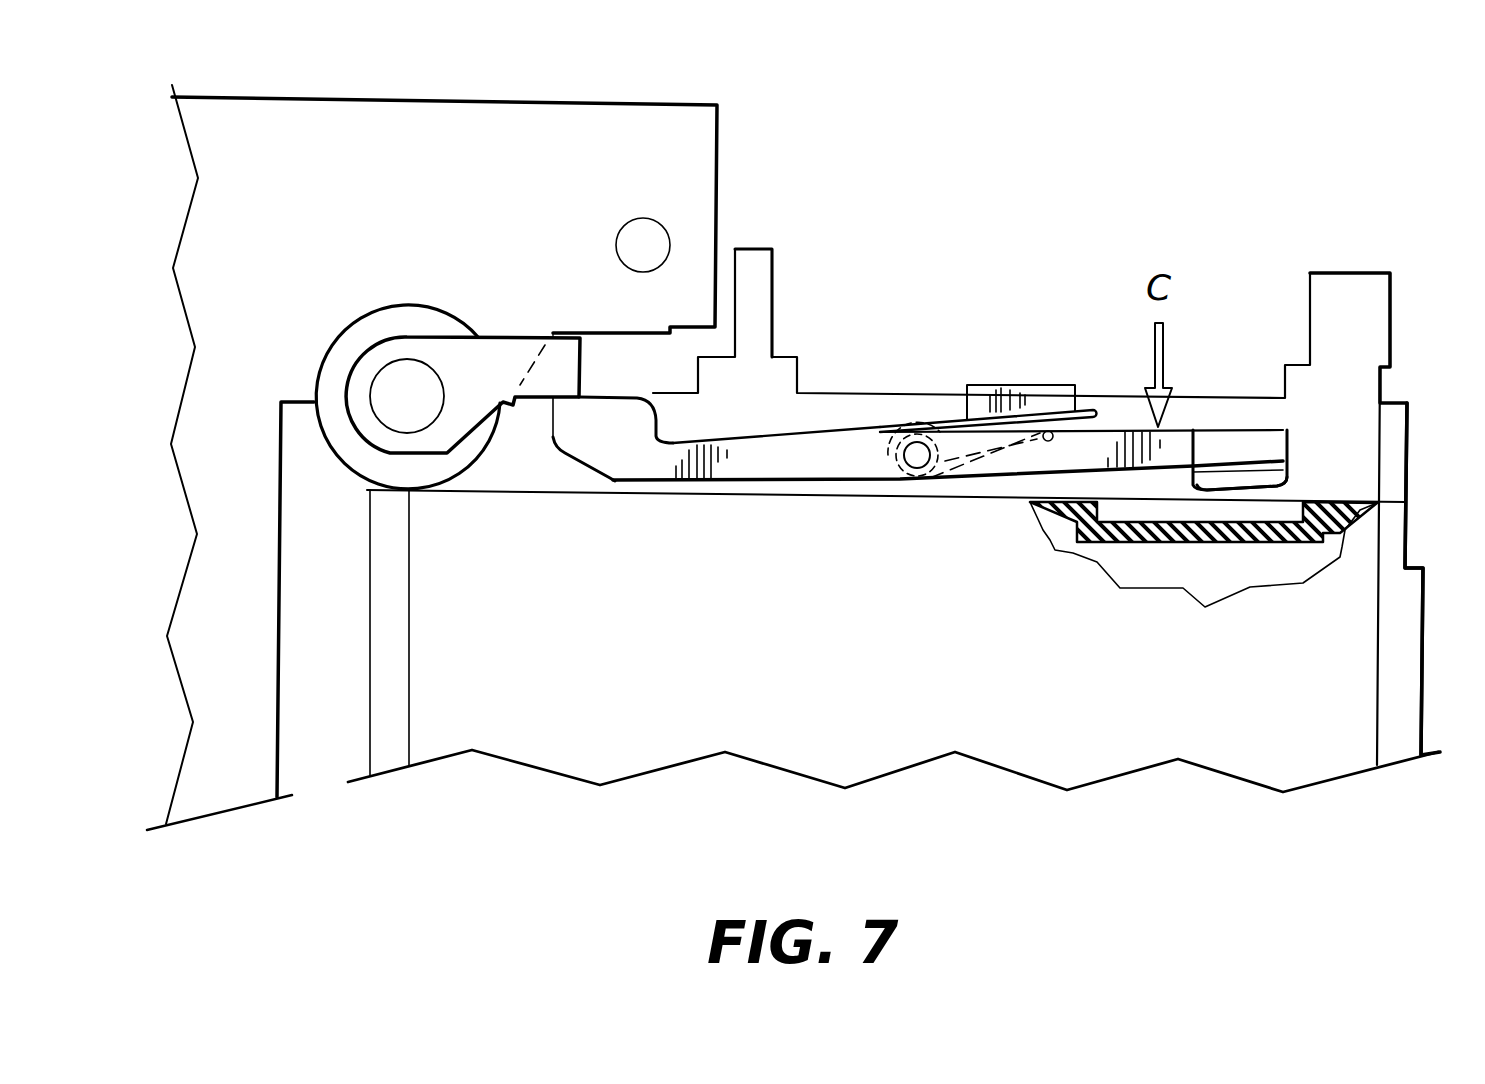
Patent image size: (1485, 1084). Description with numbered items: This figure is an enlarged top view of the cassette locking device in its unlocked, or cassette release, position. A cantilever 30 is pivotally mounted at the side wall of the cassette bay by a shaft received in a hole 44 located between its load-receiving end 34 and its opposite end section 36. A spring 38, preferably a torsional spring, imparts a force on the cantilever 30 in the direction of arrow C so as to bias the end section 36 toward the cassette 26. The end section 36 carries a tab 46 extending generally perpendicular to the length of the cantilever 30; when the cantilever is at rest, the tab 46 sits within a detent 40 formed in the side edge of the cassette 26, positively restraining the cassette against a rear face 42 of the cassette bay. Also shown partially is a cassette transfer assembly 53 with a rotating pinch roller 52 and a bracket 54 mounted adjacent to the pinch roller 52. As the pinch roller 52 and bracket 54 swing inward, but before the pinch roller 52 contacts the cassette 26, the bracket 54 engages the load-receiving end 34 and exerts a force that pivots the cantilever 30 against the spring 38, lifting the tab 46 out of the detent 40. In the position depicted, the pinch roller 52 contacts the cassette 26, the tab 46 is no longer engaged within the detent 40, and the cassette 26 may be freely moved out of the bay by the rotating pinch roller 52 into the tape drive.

The cassette 26 is at (598, 718).
The cantilever 30 is at (797, 457).
The load-receiving end 34 is at (583, 427).
The end section 36 is at (1212, 447).
The spring 38 is at (1087, 412).
The detent 40 is at (1163, 518).
The rear face 42 is at (1400, 670).
The hole 44 is at (917, 455).
The tab 46 is at (1250, 477).
The pinch roller 52 is at (345, 352).
The cassette transfer assembly 53 is at (665, 172).
The bracket 54 is at (565, 360).